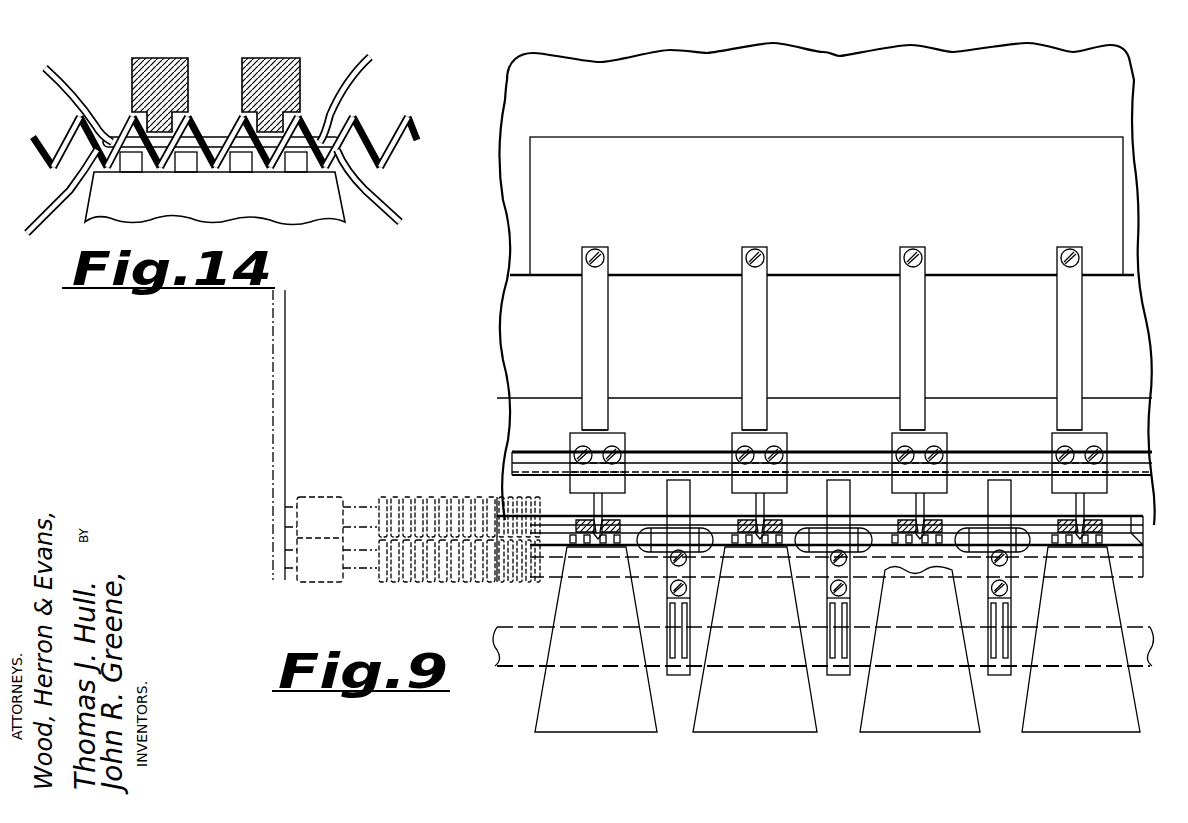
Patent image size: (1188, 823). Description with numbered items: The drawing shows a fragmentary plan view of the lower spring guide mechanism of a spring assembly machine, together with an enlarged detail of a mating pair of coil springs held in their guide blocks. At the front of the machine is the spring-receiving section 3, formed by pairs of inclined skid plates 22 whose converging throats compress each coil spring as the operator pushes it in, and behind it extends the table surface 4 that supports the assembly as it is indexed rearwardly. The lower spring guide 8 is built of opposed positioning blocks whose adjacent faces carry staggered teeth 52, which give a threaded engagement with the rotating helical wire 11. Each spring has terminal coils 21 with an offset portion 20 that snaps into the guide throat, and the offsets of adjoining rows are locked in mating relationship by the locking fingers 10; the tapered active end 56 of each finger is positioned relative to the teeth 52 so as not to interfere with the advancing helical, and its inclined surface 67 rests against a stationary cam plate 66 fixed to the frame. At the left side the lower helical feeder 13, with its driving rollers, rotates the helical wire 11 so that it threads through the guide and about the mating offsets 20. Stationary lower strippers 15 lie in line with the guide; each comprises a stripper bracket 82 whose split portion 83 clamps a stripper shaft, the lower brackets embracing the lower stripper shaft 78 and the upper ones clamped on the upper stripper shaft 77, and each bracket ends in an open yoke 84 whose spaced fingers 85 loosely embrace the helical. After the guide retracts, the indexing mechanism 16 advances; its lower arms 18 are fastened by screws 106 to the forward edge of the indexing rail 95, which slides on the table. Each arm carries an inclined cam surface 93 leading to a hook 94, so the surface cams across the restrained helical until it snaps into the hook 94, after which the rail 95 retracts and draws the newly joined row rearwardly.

In FIG. 9, the spring-receiving section 3 is at (595, 708).
In FIG. 9, the table surface 4 is at (640, 72).
In FIG. 14, the lower spring guide 8 is at (200, 190).
In FIG. 9, the lower spring guide 8 is at (600, 560).
In FIG. 9, the locking finger 10 is at (592, 505).
In FIG. 14, the helical wire 11 is at (360, 122).
In FIG. 9, the lower helical feeder 13 is at (390, 495).
In FIG. 9, the lower stripper 15 is at (818, 542).
In FIG. 9, the indexing mechanism 16 is at (822, 320).
In FIG. 9, the lower arm 18 is at (600, 360).
In FIG. 14, the offset portion 20 is at (220, 148).
In FIG. 14, the terminal coil 21 is at (350, 72).
In FIG. 14, the skid plate 22 is at (320, 210).
In FIG. 9, the skid plate 22 is at (633, 724).
In FIG. 14, the teeth 52 is at (157, 120).
In FIG. 9, the teeth 52 is at (625, 545).
In FIG. 9, the active end 56 is at (930, 542).
In FIG. 9, the cam plate 66 is at (740, 445).
In FIG. 9, the inclined surface 67 is at (738, 510).
In FIG. 9, the upper stripper shaft 77 is at (456, 495).
In FIG. 9, the lower stripper shaft 78 is at (520, 650).
In FIG. 9, the stripper bracket 82 is at (670, 617).
In FIG. 9, the split portion 83 is at (686, 650).
In FIG. 9, the open yoke 84 is at (835, 537).
In FIG. 9, the finger 85 is at (676, 490).
In FIG. 9, the inclined cam surface 93 is at (1087, 415).
In FIG. 9, the hook 94 is at (600, 405).
In FIG. 9, the indexing rail 95 is at (712, 152).
In FIG. 9, the screw 106 is at (604, 262).